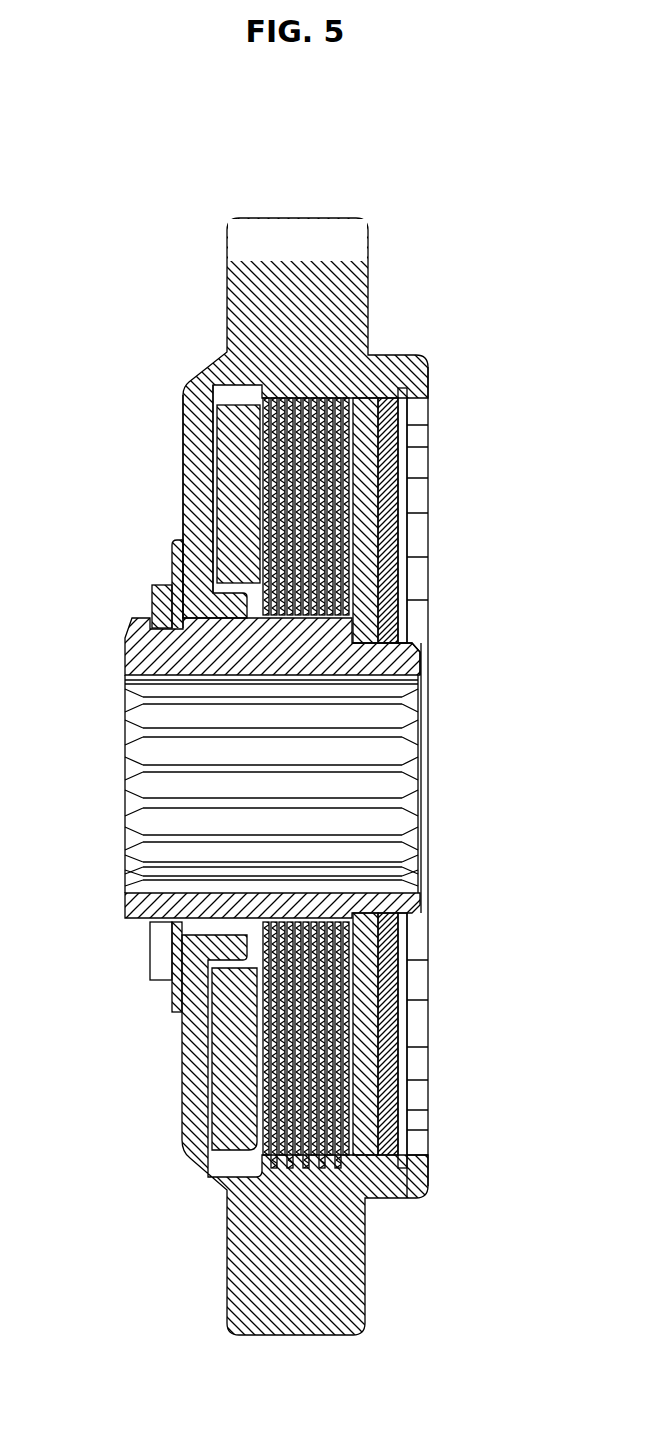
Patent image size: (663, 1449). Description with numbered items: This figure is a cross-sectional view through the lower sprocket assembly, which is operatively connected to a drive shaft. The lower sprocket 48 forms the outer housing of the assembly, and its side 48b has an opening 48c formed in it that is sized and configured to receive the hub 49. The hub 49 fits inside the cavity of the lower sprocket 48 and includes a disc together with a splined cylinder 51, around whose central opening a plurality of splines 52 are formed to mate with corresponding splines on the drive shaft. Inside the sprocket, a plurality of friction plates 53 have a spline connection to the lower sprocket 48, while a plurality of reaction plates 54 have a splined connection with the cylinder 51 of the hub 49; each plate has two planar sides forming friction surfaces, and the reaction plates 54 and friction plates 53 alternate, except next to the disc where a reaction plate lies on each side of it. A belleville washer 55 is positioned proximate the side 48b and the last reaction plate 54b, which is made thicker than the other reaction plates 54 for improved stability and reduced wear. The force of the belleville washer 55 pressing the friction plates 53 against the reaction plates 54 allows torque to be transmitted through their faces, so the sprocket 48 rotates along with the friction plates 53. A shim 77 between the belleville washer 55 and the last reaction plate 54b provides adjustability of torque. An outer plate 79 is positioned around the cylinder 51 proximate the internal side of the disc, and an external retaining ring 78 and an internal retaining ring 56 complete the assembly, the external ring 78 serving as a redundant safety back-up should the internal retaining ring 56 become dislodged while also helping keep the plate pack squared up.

The lower sprocket 48 is at (220, 352).
The side 48b is at (192, 515).
The opening 48c is at (205, 932).
The hub 49 is at (120, 638).
The splined cylinder 51 is at (355, 663).
The splines 52 is at (378, 768).
The friction plates 53 is at (266, 398).
The reaction plates 54 is at (274, 398).
The last reaction plate 54b is at (170, 553).
The belleville washer 55 is at (218, 420).
The internal retaining ring 56 is at (402, 423).
The shim 77 is at (202, 482).
The external retaining ring 78 is at (148, 593).
The outer plate 79 is at (400, 525).